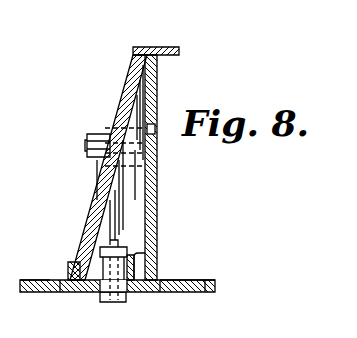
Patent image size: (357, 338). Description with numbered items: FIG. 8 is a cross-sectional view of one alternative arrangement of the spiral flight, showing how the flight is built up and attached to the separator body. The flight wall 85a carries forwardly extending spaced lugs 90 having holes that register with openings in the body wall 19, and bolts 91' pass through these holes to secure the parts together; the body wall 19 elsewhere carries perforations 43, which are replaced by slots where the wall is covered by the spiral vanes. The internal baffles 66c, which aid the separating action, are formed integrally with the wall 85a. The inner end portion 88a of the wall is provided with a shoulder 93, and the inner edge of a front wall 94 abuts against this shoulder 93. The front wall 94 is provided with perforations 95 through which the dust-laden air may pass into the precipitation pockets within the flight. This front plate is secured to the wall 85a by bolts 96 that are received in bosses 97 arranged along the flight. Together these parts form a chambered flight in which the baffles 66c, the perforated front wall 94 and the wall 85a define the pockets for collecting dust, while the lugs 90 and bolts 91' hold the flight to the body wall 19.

The wall 19 is at (192, 278).
The perforations 43 is at (53, 278).
The front wall 94 is at (158, 77).
The perforations 95 is at (157, 128).
The inner end portion 88a is at (167, 45).
The wall 85a is at (88, 228).
The shoulder 93 is at (135, 57).
The bolts 96 is at (83, 147).
The internal baffles 66c is at (117, 205).
The bosses 97 is at (93, 172).
The lugs 90 is at (131, 272).
The bolts 91' is at (97, 277).